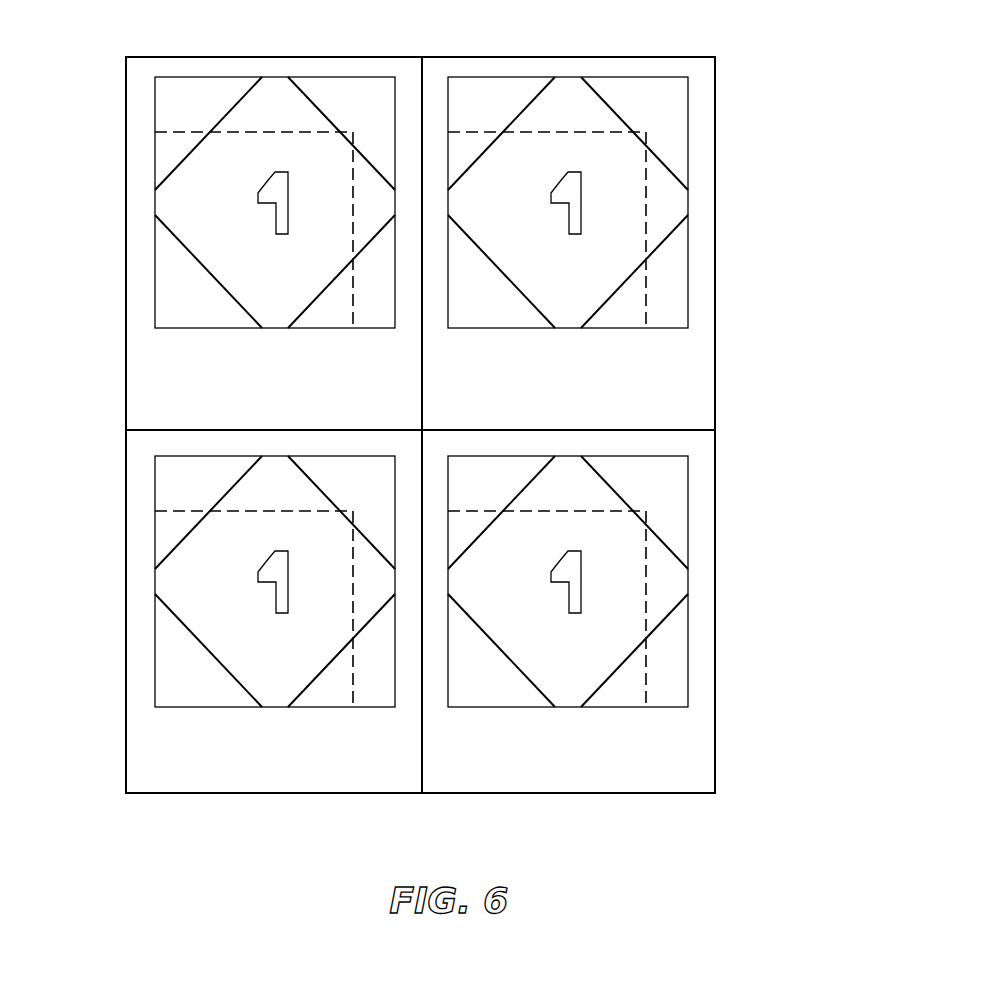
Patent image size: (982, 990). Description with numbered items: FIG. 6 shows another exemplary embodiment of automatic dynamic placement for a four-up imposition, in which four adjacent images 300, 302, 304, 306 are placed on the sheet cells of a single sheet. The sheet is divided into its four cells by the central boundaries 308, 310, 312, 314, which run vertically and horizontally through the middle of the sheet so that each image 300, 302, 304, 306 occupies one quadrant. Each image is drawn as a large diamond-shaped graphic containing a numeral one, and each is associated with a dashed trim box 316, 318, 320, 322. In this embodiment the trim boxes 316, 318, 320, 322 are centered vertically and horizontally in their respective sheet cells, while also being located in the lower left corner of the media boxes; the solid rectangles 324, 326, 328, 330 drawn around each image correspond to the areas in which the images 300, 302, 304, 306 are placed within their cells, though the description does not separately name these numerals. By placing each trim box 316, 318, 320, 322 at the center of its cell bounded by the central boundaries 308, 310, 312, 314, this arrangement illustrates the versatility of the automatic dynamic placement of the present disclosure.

The image 300 is at (308, 93).
The image 302 is at (670, 170).
The image 304 is at (665, 543).
The image 306 is at (180, 627).
The central boundary 308 is at (423, 73).
The central boundary 310 is at (685, 428).
The central boundary 312 is at (423, 773).
The central boundary 314 is at (150, 428).
The trim box 316 is at (170, 130).
The trim box 318 is at (553, 130).
The trim box 320 is at (648, 580).
The trim box 322 is at (172, 507).
The first cell 324 is at (212, 77).
The second cell 326 is at (637, 77).
The fourth cell 328 is at (667, 710).
The third cell 330 is at (325, 710).